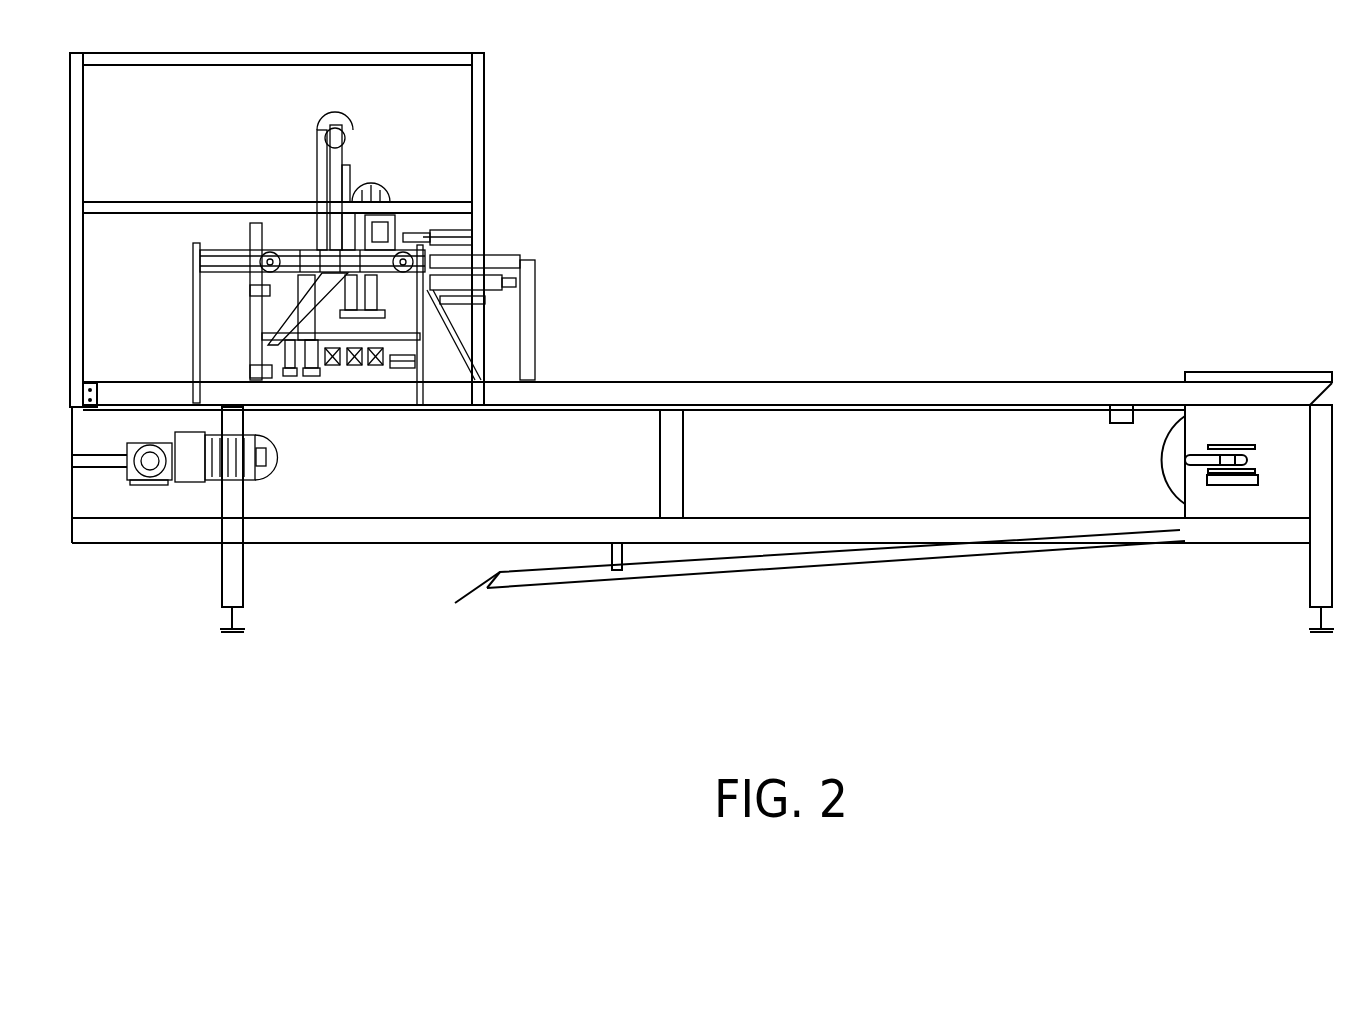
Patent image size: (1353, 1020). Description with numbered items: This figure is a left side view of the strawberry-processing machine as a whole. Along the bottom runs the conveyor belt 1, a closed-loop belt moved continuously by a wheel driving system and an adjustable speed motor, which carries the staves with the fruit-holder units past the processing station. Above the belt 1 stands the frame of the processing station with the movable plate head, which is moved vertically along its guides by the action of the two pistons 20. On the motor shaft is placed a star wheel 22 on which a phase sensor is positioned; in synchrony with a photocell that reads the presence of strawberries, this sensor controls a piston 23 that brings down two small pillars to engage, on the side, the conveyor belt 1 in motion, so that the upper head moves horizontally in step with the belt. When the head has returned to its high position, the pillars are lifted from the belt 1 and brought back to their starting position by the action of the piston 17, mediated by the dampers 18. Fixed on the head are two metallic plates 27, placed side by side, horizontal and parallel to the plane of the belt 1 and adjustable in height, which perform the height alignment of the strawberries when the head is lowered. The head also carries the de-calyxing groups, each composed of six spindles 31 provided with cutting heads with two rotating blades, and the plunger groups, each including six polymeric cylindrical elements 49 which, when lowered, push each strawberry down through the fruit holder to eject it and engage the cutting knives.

The conveyor belt 1 is at (937, 382).
The piston 17 is at (500, 270).
The dampers 18 is at (467, 235).
The pistons 20 is at (352, 186).
The star wheel 22 is at (148, 478).
The piston 23 is at (250, 237).
The metallic plates 27 is at (428, 383).
The spindles 31 is at (376, 368).
The cylindrical elements 49 is at (293, 385).